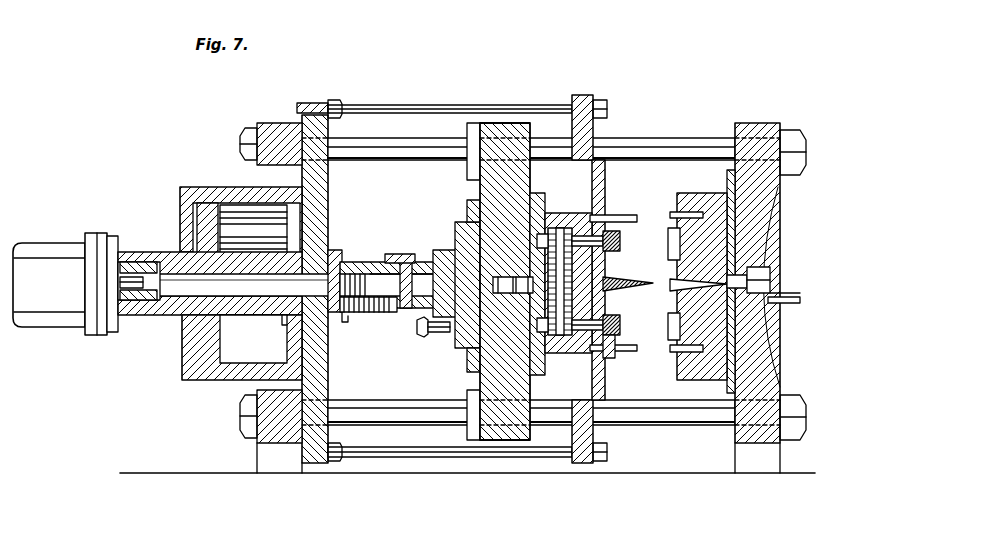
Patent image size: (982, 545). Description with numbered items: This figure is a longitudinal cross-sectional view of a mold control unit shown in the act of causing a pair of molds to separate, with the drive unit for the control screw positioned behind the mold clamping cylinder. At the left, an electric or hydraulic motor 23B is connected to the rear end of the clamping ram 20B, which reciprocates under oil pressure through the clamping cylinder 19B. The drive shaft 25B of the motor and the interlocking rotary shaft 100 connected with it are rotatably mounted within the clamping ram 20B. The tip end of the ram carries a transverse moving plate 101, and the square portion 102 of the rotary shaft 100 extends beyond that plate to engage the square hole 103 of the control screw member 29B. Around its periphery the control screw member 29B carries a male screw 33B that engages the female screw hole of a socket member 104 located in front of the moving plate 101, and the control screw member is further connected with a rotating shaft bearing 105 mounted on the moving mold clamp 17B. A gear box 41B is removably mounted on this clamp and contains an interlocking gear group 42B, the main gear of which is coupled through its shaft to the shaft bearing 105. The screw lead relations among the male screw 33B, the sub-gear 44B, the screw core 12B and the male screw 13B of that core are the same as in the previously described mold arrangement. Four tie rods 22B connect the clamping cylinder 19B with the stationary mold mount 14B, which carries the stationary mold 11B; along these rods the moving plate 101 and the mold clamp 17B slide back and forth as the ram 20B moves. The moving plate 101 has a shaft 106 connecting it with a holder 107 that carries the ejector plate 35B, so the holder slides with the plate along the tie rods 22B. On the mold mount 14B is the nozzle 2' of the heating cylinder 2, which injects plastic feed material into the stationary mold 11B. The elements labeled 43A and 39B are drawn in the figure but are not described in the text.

The electric motor or hydraulic motor 23B is at (53, 257).
The clamping cylinder 19B is at (195, 187).
The clamping ram 20B is at (177, 307).
The drive shaft 25B is at (130, 318).
The interlocking rotary shaft 100 is at (238, 287).
The moving plate 101 is at (318, 178).
The square portion 102 is at (366, 260).
The square hole 103 is at (410, 318).
The socket member 104 is at (358, 322).
The rotating shaft bearing 105 is at (438, 296).
The shaft 106 is at (505, 300).
The holder 107 is at (582, 98).
The control screw member 29B is at (400, 313).
The male screw 33B is at (398, 255).
The tie rods 22B is at (352, 148).
The moving mold clamp 17B is at (497, 135).
The gear box 41B is at (560, 223).
The sub-gear 44B is at (558, 348).
The upper adjusting screw 43A is at (618, 262).
The interlocking gear group 42B is at (612, 316).
The upper guide rod 39B is at (618, 230).
The male screw 13B is at (617, 331).
The screw core 12B is at (620, 346).
The ejector plate 35B is at (612, 175).
The stationary mold 11B is at (708, 235).
The stationary mold mount 14B is at (757, 165).
The nozzle 2' is at (772, 277).
The heating cylinder 2 is at (790, 312).